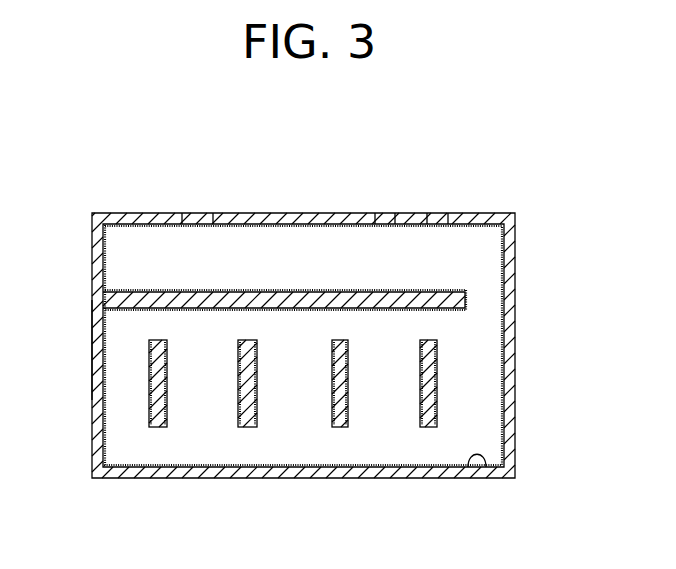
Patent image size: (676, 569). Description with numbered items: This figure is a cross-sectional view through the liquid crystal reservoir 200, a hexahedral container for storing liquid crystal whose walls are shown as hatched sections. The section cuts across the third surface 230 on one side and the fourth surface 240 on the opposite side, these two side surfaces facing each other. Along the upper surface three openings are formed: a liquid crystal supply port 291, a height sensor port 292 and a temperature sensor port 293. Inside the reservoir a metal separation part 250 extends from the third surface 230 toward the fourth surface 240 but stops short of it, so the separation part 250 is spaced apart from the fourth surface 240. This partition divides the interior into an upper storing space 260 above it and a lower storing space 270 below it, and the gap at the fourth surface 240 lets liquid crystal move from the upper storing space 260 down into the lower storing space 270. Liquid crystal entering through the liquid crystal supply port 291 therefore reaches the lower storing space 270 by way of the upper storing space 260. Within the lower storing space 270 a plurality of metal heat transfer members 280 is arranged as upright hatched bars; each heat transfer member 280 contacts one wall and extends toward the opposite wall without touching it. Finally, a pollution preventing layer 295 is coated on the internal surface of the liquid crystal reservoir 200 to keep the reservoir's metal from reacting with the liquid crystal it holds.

The liquid crystal reservoir 200 is at (318, 150).
The third surface 230 is at (92, 318).
The fourth surface 240 is at (516, 318).
The separation part 250 is at (150, 302).
The upper storing space 260 is at (410, 268).
The lower storing space 270 is at (470, 387).
The heat transfer member 280 is at (340, 378).
The liquid crystal supply port 291 is at (198, 221).
The height sensor port 292 is at (384, 221).
The temperature sensor port 293 is at (437, 221).
The pollution preventing layer 295 is at (483, 462).